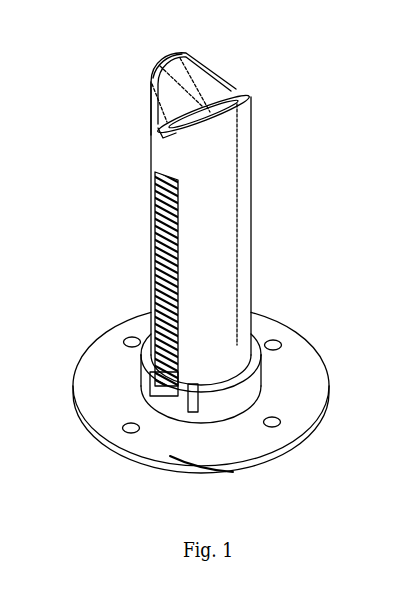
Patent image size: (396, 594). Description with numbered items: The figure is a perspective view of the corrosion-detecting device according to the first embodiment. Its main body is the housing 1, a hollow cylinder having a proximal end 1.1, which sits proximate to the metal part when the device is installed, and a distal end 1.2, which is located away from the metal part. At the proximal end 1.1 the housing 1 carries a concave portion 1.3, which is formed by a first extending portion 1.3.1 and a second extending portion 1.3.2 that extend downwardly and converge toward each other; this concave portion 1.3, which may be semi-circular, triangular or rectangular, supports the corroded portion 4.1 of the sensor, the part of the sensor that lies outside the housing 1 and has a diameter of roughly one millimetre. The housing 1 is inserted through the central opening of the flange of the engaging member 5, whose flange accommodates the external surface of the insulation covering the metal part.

The housing 1 is at (253, 265).
The proximal end 1.1 is at (253, 94).
The distal end 1.2 is at (230, 461).
The concave portion 1.3 is at (234, 72).
The first extending portion 1.3.1 is at (151, 88).
The second extending portion 1.3.2 is at (160, 126).
The corroded portion 4.1 is at (206, 108).
The engaging member 5 is at (318, 339).